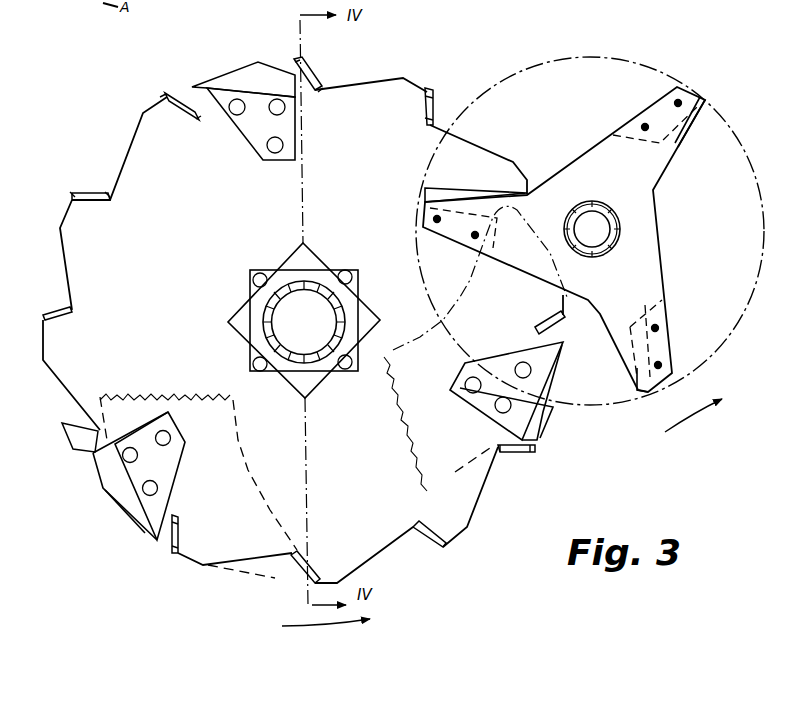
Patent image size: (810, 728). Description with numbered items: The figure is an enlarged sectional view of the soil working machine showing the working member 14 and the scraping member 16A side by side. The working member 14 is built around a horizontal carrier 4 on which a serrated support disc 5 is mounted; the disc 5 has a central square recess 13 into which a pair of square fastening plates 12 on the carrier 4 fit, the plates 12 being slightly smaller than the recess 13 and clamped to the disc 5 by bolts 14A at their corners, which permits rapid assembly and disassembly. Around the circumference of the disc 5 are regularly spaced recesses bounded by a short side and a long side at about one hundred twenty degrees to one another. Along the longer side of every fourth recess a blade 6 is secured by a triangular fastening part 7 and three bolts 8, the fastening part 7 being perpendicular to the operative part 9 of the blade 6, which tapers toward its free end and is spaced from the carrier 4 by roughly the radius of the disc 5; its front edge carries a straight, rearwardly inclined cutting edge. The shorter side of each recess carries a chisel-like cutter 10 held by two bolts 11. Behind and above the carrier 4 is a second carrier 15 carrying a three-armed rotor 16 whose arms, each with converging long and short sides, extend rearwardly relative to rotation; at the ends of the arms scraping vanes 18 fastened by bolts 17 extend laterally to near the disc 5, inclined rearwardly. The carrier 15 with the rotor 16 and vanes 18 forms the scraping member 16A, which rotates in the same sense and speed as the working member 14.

The carrier 4 is at (265, 323).
The support disc 5 is at (130, 155).
The blade 6 is at (258, 60).
The triangular fastening part 7 is at (267, 158).
The bolts 8 is at (245, 110).
The operative part 9 is at (235, 75).
The cutter 10 is at (180, 113).
The bolts 11 is at (178, 98).
The square fastening plate 12 is at (250, 300).
The square recess 13 is at (305, 258).
The working member 14 is at (218, 582).
The bolts 14A is at (262, 273).
The carrier 15 is at (627, 242).
The rotor 16 is at (588, 150).
The scraping member 16A is at (622, 57).
The bolts 17 is at (438, 223).
The scraping vane 18 is at (437, 195).